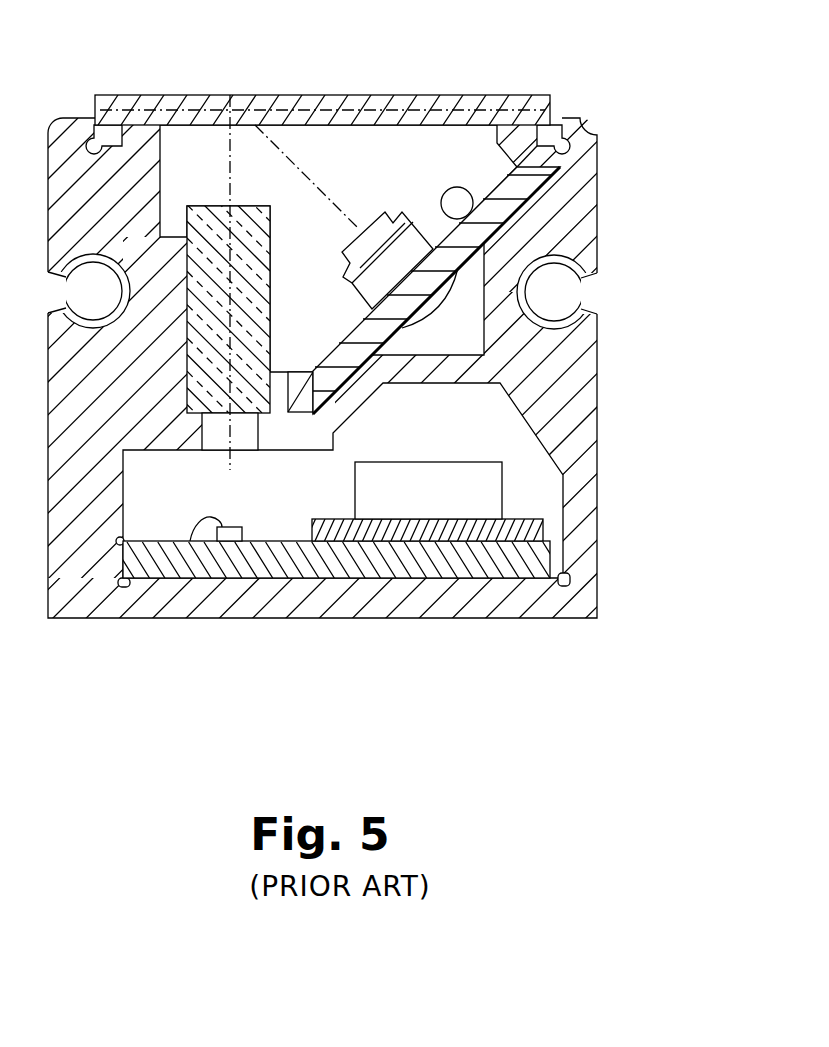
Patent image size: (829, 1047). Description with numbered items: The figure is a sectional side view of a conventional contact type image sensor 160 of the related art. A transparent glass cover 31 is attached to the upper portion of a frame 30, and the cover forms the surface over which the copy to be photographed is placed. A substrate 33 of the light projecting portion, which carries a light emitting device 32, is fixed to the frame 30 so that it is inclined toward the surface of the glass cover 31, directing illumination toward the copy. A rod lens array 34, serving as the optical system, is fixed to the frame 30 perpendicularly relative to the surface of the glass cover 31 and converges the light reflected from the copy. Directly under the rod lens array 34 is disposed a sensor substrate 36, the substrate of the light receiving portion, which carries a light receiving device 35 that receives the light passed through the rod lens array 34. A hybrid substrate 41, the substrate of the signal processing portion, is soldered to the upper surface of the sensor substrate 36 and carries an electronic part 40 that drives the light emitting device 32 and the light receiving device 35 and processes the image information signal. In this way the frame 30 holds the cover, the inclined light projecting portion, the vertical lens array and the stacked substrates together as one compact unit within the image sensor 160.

The frame 30 is at (82, 197).
The transparent cover 31 is at (472, 107).
The light emitting device 32 is at (377, 243).
The substrate of a light projecting portion 33 is at (508, 190).
The rod lens array 34 is at (210, 217).
The light receiving device 35 is at (231, 541).
The sensor substrate 36 is at (308, 562).
The electronic part 40 is at (405, 495).
The hybrid substrate 41 is at (478, 527).
The image sensor 160 is at (632, 165).